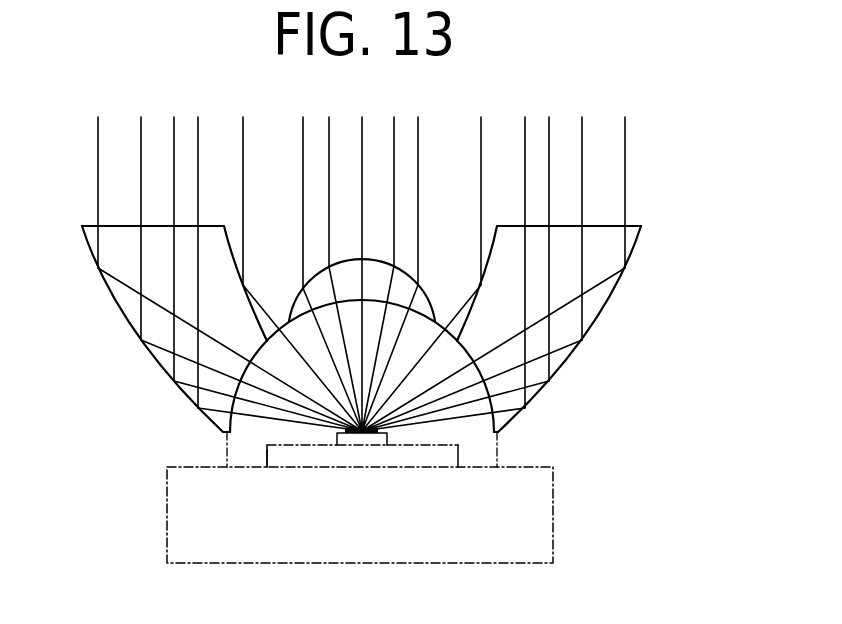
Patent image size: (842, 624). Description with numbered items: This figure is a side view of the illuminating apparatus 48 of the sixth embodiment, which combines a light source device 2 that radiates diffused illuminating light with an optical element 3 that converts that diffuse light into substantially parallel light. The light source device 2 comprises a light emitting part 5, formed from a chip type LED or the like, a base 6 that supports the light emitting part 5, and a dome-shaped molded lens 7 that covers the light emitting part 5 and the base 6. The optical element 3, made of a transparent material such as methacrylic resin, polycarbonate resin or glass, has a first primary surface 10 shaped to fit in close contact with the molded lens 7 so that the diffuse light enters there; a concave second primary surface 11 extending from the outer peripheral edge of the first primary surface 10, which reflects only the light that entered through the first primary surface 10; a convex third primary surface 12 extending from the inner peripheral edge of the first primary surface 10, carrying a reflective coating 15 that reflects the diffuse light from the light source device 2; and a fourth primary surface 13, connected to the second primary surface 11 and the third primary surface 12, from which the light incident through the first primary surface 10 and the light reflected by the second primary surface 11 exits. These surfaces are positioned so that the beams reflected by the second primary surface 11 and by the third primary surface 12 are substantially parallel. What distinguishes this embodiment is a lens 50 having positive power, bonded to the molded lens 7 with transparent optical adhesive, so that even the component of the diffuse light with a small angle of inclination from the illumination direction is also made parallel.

The illuminating apparatus 48 is at (700, 225).
The light source device 2 is at (612, 516).
The optical element 3 is at (598, 302).
The light emitting part 5 is at (388, 437).
The base 6 is at (267, 450).
The molded lens 7 is at (490, 460).
The primary surface-1 10 is at (235, 440).
The primary surface-2 11 is at (133, 312).
The primary surface-3 12 is at (495, 233).
The primary surface-4 13 is at (118, 226).
The reflective coating 15 is at (255, 318).
The lens 50 is at (378, 265).